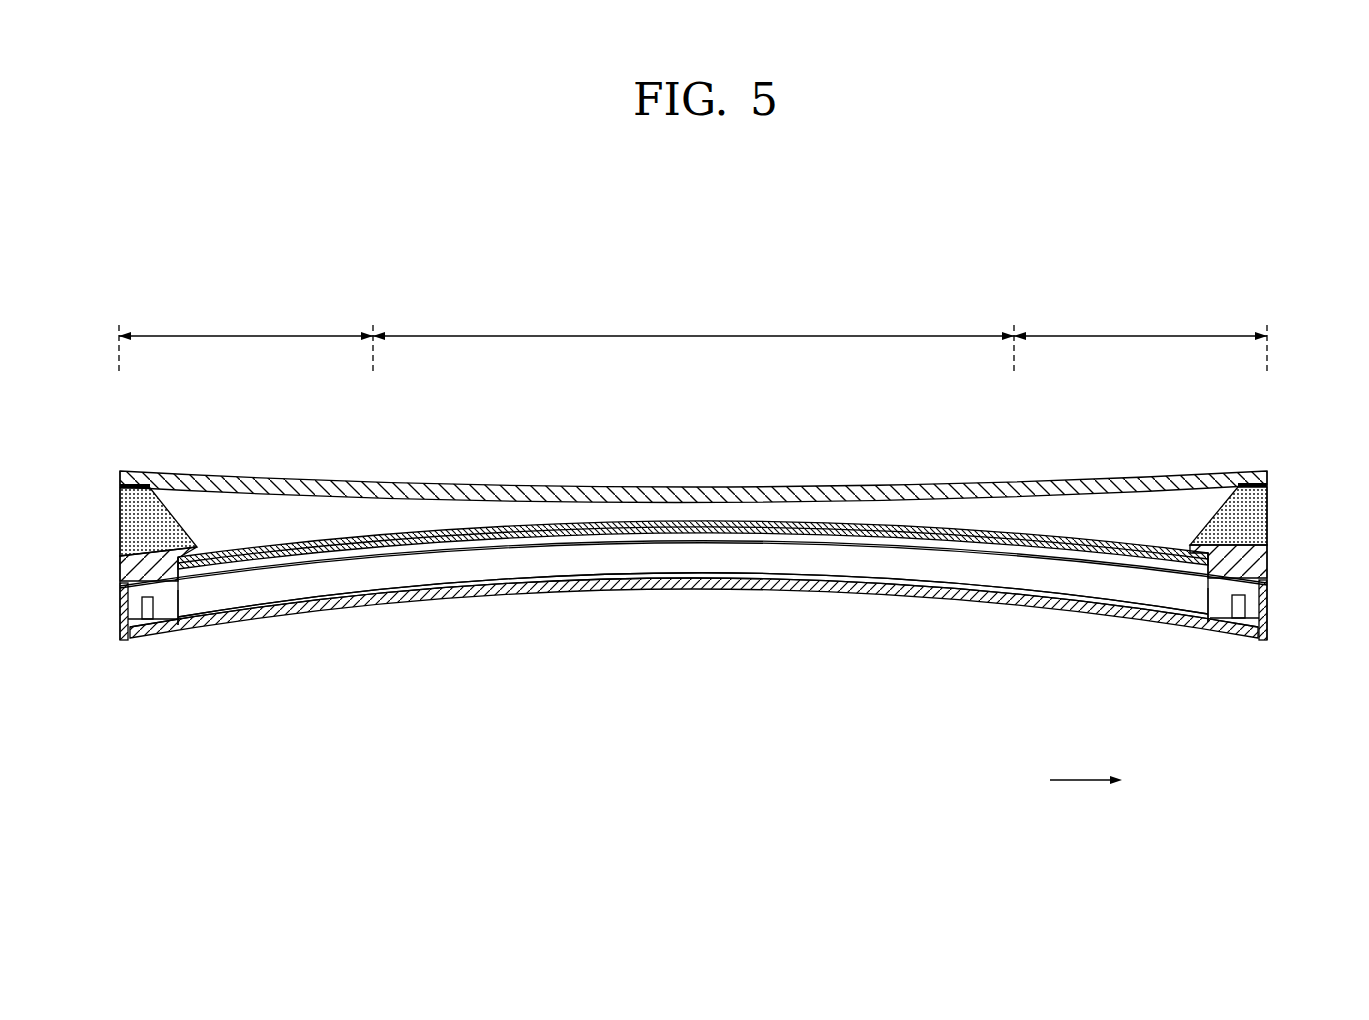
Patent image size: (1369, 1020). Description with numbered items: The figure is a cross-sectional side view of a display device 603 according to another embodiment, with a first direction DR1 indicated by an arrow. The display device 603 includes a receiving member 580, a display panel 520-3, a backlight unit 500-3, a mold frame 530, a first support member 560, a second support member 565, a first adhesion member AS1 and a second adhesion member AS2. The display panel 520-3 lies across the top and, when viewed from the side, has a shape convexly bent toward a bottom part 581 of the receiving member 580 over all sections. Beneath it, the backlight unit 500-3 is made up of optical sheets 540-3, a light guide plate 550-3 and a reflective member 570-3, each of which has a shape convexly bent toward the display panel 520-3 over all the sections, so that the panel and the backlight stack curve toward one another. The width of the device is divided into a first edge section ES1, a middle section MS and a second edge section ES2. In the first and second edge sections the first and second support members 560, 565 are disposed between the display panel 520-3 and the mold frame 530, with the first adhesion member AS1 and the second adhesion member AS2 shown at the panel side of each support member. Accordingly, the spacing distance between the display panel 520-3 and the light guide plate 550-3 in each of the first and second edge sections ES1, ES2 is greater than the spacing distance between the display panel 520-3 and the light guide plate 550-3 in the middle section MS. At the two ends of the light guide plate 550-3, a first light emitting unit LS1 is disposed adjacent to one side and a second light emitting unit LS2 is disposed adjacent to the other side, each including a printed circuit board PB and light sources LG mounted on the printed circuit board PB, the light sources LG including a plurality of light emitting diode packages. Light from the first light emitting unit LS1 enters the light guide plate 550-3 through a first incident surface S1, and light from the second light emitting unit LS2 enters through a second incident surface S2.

The display device 603 is at (1238, 246).
The first edge section ES1 is at (246, 323).
The middle section MS is at (693, 323).
The second edge section ES2 is at (1140, 325).
The display panel 520-3 is at (1277, 476).
The first adhesion member AS1 is at (120, 485).
The second adhesion member AS2 is at (1268, 487).
The first support member 560 is at (121, 517).
The second support member 565 is at (1260, 525).
The mold frame 530 is at (130, 567).
The optical sheets 540-3 is at (697, 530).
The light guide plate 550-3 is at (765, 562).
The reflective member 570-3 is at (835, 578).
The bottom part 581 is at (907, 597).
The backlight unit 500-3 is at (663, 665).
The receiving member 580 is at (1264, 600).
The light sources LG is at (125, 609).
The printed circuit board PB is at (143, 623).
The first incident surface S1 is at (175, 613).
The second incident surface S2 is at (1211, 607).
The first light emitting unit LS1 is at (158, 707).
The second light emitting unit LS2 is at (1295, 707).
The first direction DR1 is at (1106, 780).